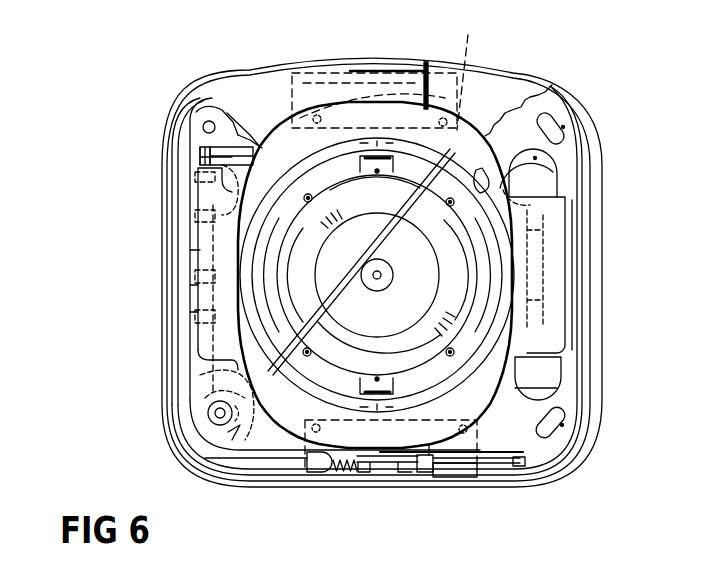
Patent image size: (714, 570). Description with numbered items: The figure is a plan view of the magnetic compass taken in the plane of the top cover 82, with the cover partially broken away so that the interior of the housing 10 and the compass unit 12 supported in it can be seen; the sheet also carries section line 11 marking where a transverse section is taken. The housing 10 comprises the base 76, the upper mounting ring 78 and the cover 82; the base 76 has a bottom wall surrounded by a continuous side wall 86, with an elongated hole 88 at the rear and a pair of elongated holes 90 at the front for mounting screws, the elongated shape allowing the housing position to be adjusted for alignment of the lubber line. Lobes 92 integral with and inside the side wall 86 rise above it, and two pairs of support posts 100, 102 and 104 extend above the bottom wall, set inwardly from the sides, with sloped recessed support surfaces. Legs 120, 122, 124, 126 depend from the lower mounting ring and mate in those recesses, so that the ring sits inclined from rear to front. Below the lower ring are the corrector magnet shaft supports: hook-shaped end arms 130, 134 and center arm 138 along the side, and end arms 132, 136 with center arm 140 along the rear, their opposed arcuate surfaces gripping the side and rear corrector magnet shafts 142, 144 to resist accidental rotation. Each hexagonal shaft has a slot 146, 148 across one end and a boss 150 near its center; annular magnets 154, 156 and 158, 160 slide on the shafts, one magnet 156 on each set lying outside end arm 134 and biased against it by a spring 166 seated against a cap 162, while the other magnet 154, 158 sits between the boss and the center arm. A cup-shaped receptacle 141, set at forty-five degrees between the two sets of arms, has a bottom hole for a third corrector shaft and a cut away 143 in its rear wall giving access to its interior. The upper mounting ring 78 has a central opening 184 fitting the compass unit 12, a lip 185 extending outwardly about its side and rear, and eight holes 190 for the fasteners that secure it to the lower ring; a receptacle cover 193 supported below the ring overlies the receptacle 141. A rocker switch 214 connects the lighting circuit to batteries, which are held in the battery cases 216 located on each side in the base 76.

The housing 10 is at (292, 259).
The section line 11- 11 is at (462, 275).
The compass unit 12 is at (297, 397).
The base 76 is at (603, 236).
The upper mounting ring 78 is at (288, 130).
The cover 82 is at (505, 82).
The side wall 86 is at (598, 143).
The elongated hole 88 is at (202, 126).
The elongated holes 90 is at (556, 118).
The lobe 92 is at (348, 472).
The support post 100 is at (530, 150).
The support post 102 is at (552, 382).
The support post 104 is at (222, 138).
The leg 120 is at (568, 170).
The leg 122 is at (578, 384).
The leg 124 is at (225, 156).
The leg 126 is at (213, 387).
The end arm 130 is at (467, 477).
The end arm 132 is at (200, 199).
The end arm 134 is at (374, 466).
The end arm 136 is at (197, 312).
The center arm 138 is at (401, 472).
The center arm 140 is at (198, 251).
The receptacle 141 is at (230, 434).
The side corrector magnet shaft 142 is at (493, 466).
The cut away 143 is at (210, 411).
The rear corrector magnet shaft 144 is at (205, 160).
The slot 146 is at (523, 462).
The slot 148 is at (208, 150).
The boss 150 is at (427, 472).
The magnet 154 is at (421, 472).
The magnet 156 is at (360, 474).
The magnet 158 is at (195, 226).
The magnet 160 is at (198, 332).
The cap 162 is at (322, 463).
The spring 166 is at (334, 478).
The central opening 184 is at (479, 174).
The lip 185 is at (296, 72).
The holes 190 is at (330, 117).
The receptacle cover 193 is at (208, 414).
The rocker switch 214 is at (190, 286).
The battery case 216 is at (262, 491).